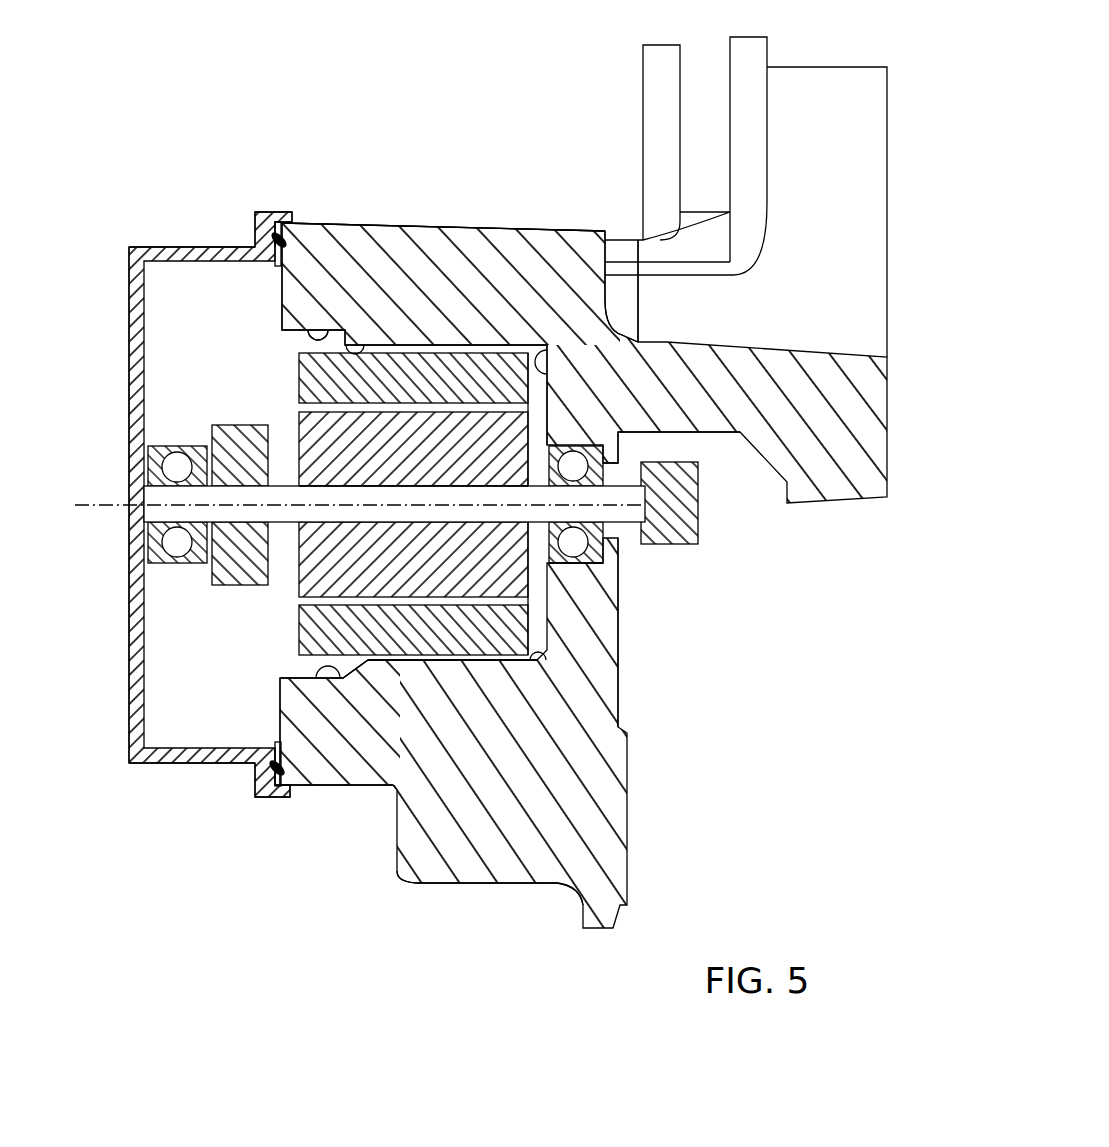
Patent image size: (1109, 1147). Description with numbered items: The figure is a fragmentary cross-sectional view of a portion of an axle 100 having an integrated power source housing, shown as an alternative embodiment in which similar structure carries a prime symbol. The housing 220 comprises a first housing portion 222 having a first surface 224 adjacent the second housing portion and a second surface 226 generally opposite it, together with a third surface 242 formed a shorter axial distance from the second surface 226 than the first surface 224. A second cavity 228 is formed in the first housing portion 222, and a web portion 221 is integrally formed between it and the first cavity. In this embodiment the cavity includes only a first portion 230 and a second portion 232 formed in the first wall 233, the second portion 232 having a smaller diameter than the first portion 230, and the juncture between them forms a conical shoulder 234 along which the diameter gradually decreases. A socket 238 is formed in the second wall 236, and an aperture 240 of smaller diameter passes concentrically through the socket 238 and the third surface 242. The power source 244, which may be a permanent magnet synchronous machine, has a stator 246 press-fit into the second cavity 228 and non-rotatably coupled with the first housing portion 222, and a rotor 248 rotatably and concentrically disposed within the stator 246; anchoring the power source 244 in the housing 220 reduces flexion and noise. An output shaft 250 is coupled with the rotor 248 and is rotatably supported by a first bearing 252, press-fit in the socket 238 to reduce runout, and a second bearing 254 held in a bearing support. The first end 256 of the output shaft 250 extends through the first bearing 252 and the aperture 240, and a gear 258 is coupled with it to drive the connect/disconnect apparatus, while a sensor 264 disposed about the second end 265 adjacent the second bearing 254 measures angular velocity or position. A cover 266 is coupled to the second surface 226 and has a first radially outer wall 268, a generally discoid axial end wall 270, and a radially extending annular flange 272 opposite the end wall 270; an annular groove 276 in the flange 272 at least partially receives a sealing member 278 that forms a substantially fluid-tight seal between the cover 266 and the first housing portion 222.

The axle 100 is at (213, 68).
The housing 220 is at (412, 212).
The web portion 221 is at (580, 884).
The first housing portion 222 is at (530, 245).
The first surface 224 is at (887, 142).
The second surface 226 is at (280, 713).
The second cavity 228 is at (400, 657).
The first portion 230 is at (320, 665).
The second portion 232 is at (562, 640).
The first wall 233 is at (318, 330).
The shoulder 234 is at (352, 340).
The second wall 236 is at (550, 345).
The socket 238 is at (572, 448).
The aperture 240 is at (605, 467).
The third surface 242 is at (627, 695).
The power source 244 is at (258, 630).
The stator 246 is at (437, 352).
The rotor 248 is at (472, 433).
The output shaft 250 is at (282, 480).
The first bearing 252 is at (603, 590).
The second bearing 254 is at (166, 546).
The first end 256 is at (632, 518).
The gear 258 is at (690, 545).
The sensor 264 is at (238, 425).
The second end 265 is at (152, 498).
The cover 266 is at (126, 410).
The first radially outer wall 268 is at (170, 247).
The axial end wall 270 is at (128, 326).
The annular flange 272 is at (255, 228).
The annular groove 276 is at (290, 785).
The sealing member 278 is at (268, 232).